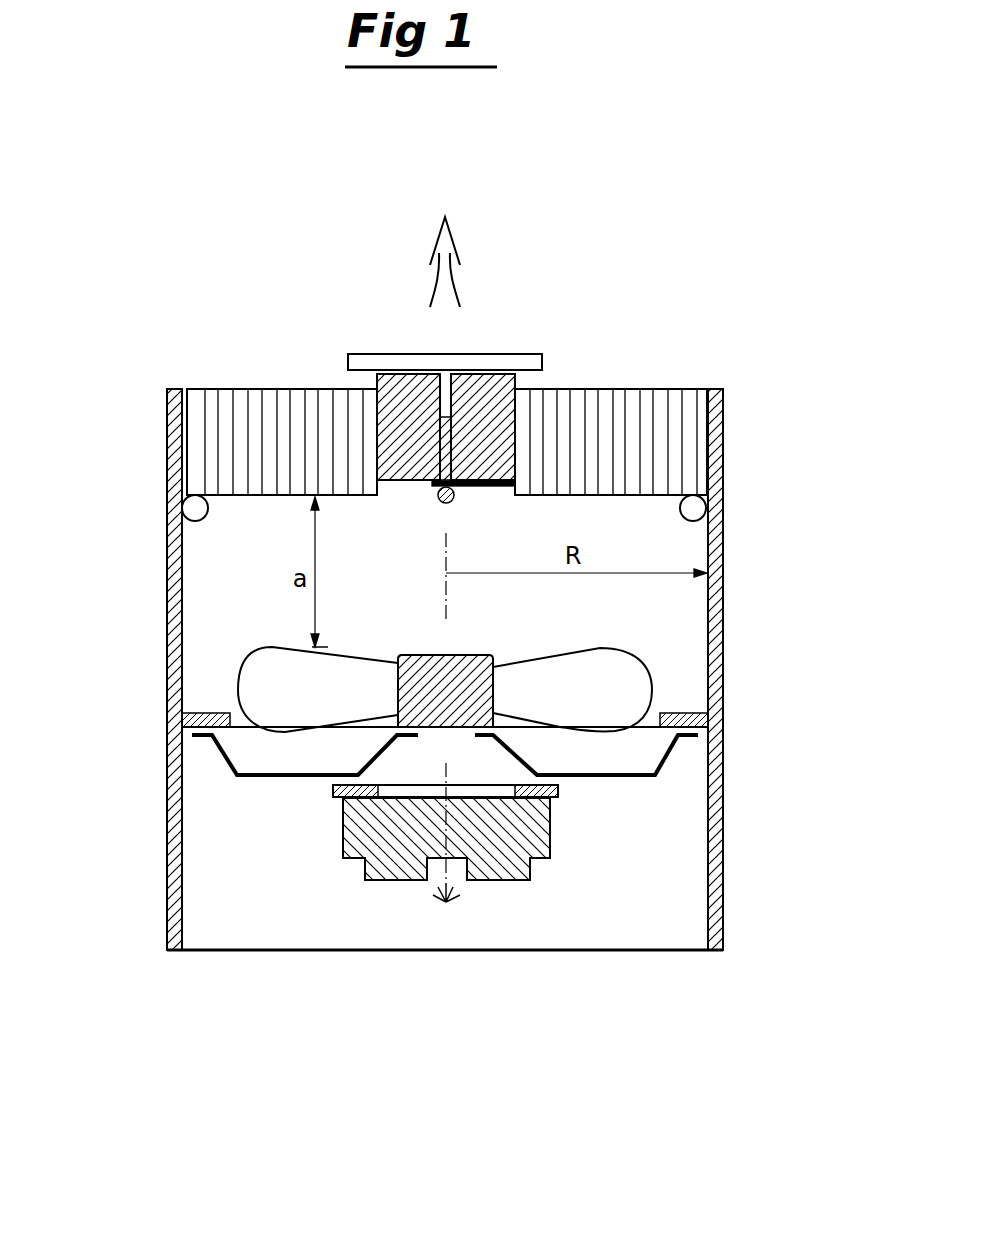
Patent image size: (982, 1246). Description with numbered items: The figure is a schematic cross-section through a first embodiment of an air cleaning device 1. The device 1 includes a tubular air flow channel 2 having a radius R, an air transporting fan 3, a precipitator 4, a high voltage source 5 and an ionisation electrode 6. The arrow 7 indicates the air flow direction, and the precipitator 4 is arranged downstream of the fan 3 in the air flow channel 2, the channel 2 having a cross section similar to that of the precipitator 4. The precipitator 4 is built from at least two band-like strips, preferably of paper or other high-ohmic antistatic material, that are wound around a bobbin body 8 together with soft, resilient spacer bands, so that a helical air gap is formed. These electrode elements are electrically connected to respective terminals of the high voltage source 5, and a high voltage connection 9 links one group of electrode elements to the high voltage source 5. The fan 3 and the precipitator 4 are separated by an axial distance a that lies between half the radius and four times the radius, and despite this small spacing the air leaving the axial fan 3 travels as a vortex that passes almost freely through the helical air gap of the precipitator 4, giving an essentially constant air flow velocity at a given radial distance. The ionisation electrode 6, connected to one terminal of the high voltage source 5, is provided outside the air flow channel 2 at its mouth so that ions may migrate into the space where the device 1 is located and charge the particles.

The device 1 is at (454, 669).
The tubular air flow channel 2 is at (174, 861).
The air transporting fan 3 is at (630, 688).
The precipitator 4 is at (244, 405).
The high voltage source 5 is at (402, 859).
The ionisation electrode 6 is at (458, 908).
The arrow 7 is at (462, 280).
The bobbin body 8 is at (404, 405).
The high voltage connection 9 is at (440, 500).